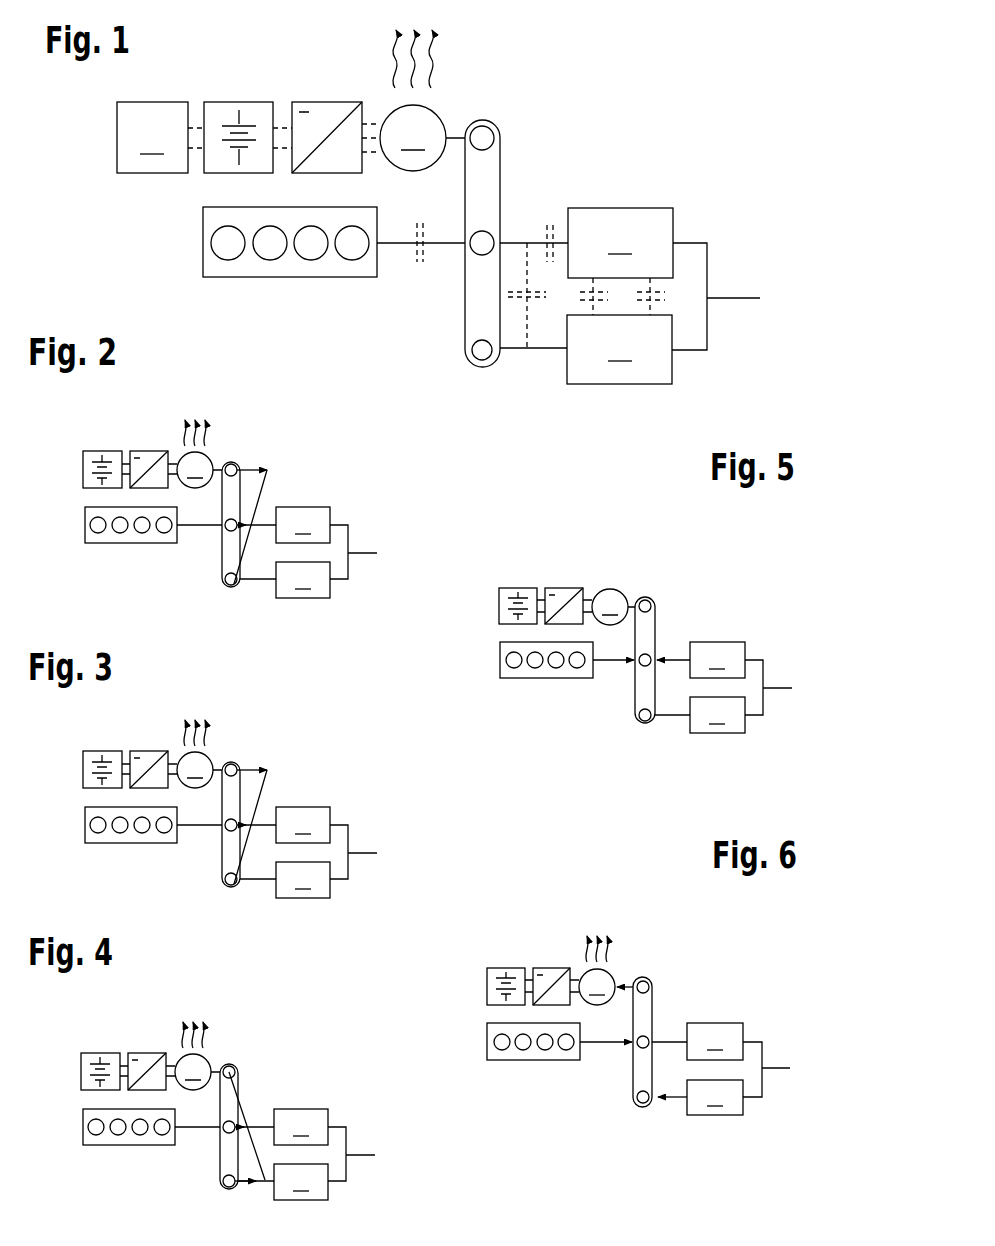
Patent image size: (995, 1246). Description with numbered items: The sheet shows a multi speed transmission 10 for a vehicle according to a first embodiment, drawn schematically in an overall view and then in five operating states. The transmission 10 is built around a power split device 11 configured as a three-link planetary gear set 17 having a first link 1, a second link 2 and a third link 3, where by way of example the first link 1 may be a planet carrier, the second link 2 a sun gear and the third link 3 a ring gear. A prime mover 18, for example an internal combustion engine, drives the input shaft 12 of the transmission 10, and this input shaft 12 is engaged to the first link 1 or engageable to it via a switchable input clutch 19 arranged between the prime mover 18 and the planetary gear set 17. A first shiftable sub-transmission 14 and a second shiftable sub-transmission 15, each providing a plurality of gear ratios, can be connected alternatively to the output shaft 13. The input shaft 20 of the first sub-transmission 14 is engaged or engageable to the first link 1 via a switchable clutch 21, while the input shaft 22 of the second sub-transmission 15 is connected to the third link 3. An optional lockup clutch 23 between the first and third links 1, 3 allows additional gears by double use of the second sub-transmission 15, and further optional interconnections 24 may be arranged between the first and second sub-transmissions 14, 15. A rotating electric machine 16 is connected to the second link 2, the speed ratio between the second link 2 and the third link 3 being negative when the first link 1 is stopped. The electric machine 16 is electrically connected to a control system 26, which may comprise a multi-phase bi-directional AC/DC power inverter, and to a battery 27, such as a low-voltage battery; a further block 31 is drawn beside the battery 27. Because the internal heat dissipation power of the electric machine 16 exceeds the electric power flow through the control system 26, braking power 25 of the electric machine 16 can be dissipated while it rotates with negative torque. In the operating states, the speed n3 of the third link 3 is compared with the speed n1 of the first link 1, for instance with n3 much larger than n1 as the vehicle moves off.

In FIG. 1, the first link 1 is at (483, 257).
In FIG. 2, the first link 1 is at (225, 521).
In FIG. 3, the first link 1 is at (216, 812).
In FIG. 4, the first link 1 is at (214, 1115).
In FIG. 5, the first link 1 is at (637, 657).
In FIG. 6, the first link 1 is at (637, 1038).
In FIG. 1, the second link 2 is at (483, 152).
In FIG. 2, the second link 2 is at (236, 465).
In FIG. 3, the second link 2 is at (251, 748).
In FIG. 4, the second link 2 is at (250, 1050).
In FIG. 5, the second link 2 is at (649, 602).
In FIG. 6, the second link 2 is at (650, 983).
In FIG. 1, the third link 3 is at (480, 361).
In FIG. 2, the third link 3 is at (227, 586).
In FIG. 3, the third link 3 is at (183, 896).
In FIG. 4, the third link 3 is at (204, 1206).
In FIG. 5, the third link 3 is at (640, 723).
In FIG. 6, the third link 3 is at (638, 1106).
In FIG. 1, the multi speed transmission 10 is at (565, 90).
In FIG. 2, the multi speed transmission 10 is at (283, 447).
In FIG. 3, the multi speed transmission 10 is at (211, 810).
In FIG. 4, the multi speed transmission 10 is at (208, 1114).
In FIG. 5, the multi speed transmission 10 is at (748, 608).
In FIG. 6, the multi speed transmission 10 is at (750, 970).
In FIG. 1, the power split device 11 is at (449, 199).
In FIG. 2, the power split device 11 is at (209, 490).
In FIG. 3, the power split device 11 is at (240, 789).
In FIG. 4, the power split device 11 is at (238, 1090).
In FIG. 5, the power split device 11 is at (645, 592).
In FIG. 6, the power split device 11 is at (645, 972).
In FIG. 1, the input shaft 12 is at (396, 262).
In FIG. 2, the input shaft 12 is at (196, 532).
In FIG. 3, the input shaft 12 is at (151, 850).
In FIG. 4, the input shaft 12 is at (149, 1152).
In FIG. 5, the input shaft 12 is at (607, 672).
In FIG. 6, the input shaft 12 is at (606, 1058).
In FIG. 1, the output shaft 13 is at (745, 298).
In FIG. 2, the output shaft 13 is at (361, 552).
In FIG. 3, the output shaft 13 is at (363, 832).
In FIG. 4, the output shaft 13 is at (359, 1134).
In FIG. 5, the output shaft 13 is at (773, 688).
In FIG. 6, the output shaft 13 is at (771, 1068).
In FIG. 1, the first shiftable sub-transmission 14 is at (620, 243).
In FIG. 2, the first shiftable sub-transmission 14 is at (303, 525).
In FIG. 3, the first shiftable sub-transmission 14 is at (303, 825).
In FIG. 4, the first shiftable sub-transmission 14 is at (301, 1127).
In FIG. 5, the first shiftable sub-transmission 14 is at (717, 660).
In FIG. 6, the first shiftable sub-transmission 14 is at (715, 1041).
In FIG. 1, the second shiftable sub-transmission 15 is at (619, 349).
In FIG. 2, the second shiftable sub-transmission 15 is at (303, 580).
In FIG. 3, the second shiftable sub-transmission 15 is at (303, 880).
In FIG. 4, the second shiftable sub-transmission 15 is at (301, 1182).
In FIG. 5, the second shiftable sub-transmission 15 is at (717, 715).
In FIG. 6, the second shiftable sub-transmission 15 is at (715, 1097).
In FIG. 1, the rotating electric machine 16 is at (422, 138).
In FIG. 2, the rotating electric machine 16 is at (199, 470).
In FIG. 3, the rotating electric machine 16 is at (199, 770).
In FIG. 4, the rotating electric machine 16 is at (197, 1072).
In FIG. 5, the rotating electric machine 16 is at (613, 607).
In FIG. 6, the rotating electric machine 16 is at (597, 987).
In FIG. 1, the three-link planetary gear set 17 is at (460, 212).
In FIG. 2, the three-link planetary gear set 17 is at (217, 564).
In FIG. 1, the prime mover 18 is at (292, 277).
In FIG. 2, the prime mover 18 is at (92, 514).
In FIG. 3, the prime mover 18 is at (102, 813).
In FIG. 4, the prime mover 18 is at (100, 1116).
In FIG. 5, the prime mover 18 is at (545, 676).
In FIG. 6, the prime mover 18 is at (550, 1058).
In FIG. 1, the switchable input clutch 19 is at (438, 262).
In FIG. 1, the input shaft of the first sub-transmission 20 is at (563, 242).
In FIG. 2, the input shaft of the first sub-transmission 20 is at (258, 524).
In FIG. 3, the input shaft of the first sub-transmission 20 is at (288, 797).
In FIG. 4, the input shaft of the first sub-transmission 20 is at (284, 1100).
In FIG. 5, the input shaft of the first sub-transmission 20 is at (676, 658).
In FIG. 6, the input shaft of the first sub-transmission 20 is at (668, 1040).
In FIG. 1, the switchable intermediate clutch 21 is at (546, 225).
In FIG. 1, the input shaft of the second sub-transmission 22 is at (553, 352).
In FIG. 2, the input shaft of the second sub-transmission 22 is at (258, 582).
In FIG. 3, the input shaft of the second sub-transmission 22 is at (249, 905).
In FIG. 4, the input shaft of the second sub-transmission 22 is at (256, 1209).
In FIG. 5, the input shaft of the second sub-transmission 22 is at (672, 718).
In FIG. 6, the input shaft of the second sub-transmission 22 is at (673, 1100).
In FIG. 1, the lockup clutch 23 is at (520, 300).
In FIG. 1, the interconnections 24 is at (582, 290).
In FIG. 1, the braking power 25 is at (404, 62).
In FIG. 2, the braking power 25 is at (183, 432).
In FIG. 3, the braking power 25 is at (166, 717).
In FIG. 4, the braking power 25 is at (167, 1020).
In FIG. 6, the braking power 25 is at (585, 935).
In FIG. 1, the control system 26 is at (320, 102).
In FIG. 2, the control system 26 is at (140, 451).
In FIG. 3, the control system 26 is at (131, 748).
In FIG. 4, the control system 26 is at (130, 1048).
In FIG. 5, the control system 26 is at (560, 588).
In FIG. 6, the control system 26 is at (547, 968).
In FIG. 1, the battery 27 is at (240, 102).
In FIG. 2, the battery 27 is at (97, 451).
In FIG. 3, the battery 27 is at (86, 746).
In FIG. 4, the battery 27 is at (86, 1046).
In FIG. 5, the battery 27 is at (515, 588).
In FIG. 6, the battery 27 is at (503, 968).
In FIG. 1, the control unit 31 is at (152, 137).
In FIG. 3, the speed of the first link n1 is at (180, 859).
In FIG. 4, the speed of the first link n1 is at (180, 1172).
In FIG. 3, the speed of the third link n3 is at (198, 909).
In FIG. 4, the speed of the third link n3 is at (219, 1213).